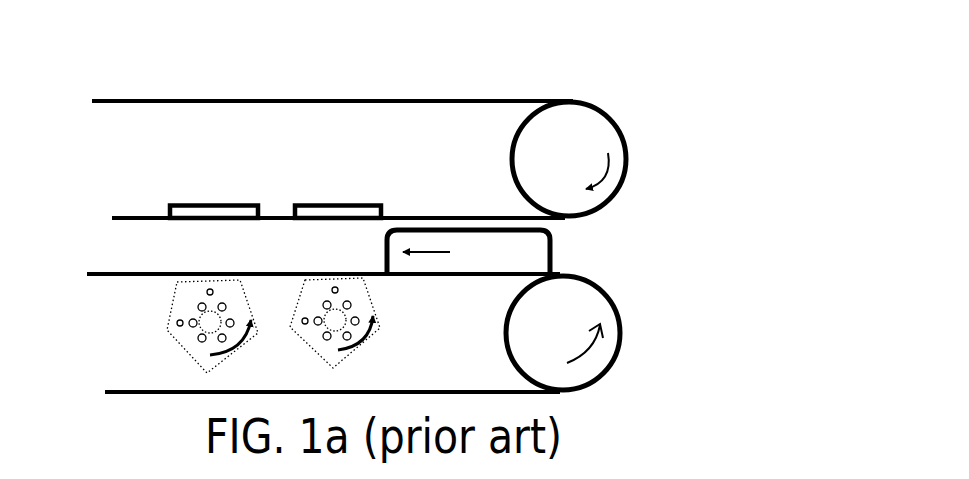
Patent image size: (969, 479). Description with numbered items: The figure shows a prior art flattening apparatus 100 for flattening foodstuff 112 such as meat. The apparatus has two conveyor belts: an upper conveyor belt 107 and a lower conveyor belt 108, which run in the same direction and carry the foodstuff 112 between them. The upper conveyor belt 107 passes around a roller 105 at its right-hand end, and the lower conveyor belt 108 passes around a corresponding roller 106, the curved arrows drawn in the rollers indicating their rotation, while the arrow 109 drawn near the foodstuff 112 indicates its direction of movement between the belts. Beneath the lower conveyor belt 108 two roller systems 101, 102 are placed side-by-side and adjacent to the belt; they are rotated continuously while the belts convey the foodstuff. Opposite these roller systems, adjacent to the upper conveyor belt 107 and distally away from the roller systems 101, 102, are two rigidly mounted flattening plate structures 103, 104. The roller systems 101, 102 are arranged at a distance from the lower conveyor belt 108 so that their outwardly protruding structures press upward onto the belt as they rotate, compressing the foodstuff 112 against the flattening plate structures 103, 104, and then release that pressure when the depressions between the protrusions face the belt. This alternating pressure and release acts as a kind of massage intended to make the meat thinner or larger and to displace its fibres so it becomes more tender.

The flattening apparatus 100 is at (660, 124).
The roller system 101 is at (173, 347).
The roller system 102 is at (365, 348).
The flattening plate structure 103 is at (180, 203).
The flattening plate structure 104 is at (302, 203).
The upper roller 105 is at (627, 181).
The lower roller 106 is at (620, 355).
The upper conveyor belt 107 is at (480, 217).
The lower conveyor belt 108 is at (97, 276).
The direction of movement 109 is at (450, 252).
The foodstuff 112 is at (552, 250).